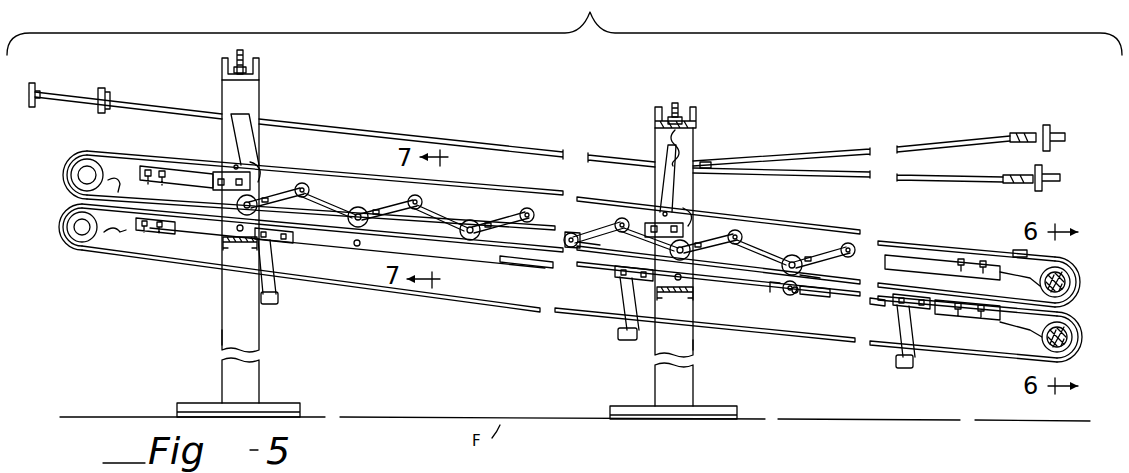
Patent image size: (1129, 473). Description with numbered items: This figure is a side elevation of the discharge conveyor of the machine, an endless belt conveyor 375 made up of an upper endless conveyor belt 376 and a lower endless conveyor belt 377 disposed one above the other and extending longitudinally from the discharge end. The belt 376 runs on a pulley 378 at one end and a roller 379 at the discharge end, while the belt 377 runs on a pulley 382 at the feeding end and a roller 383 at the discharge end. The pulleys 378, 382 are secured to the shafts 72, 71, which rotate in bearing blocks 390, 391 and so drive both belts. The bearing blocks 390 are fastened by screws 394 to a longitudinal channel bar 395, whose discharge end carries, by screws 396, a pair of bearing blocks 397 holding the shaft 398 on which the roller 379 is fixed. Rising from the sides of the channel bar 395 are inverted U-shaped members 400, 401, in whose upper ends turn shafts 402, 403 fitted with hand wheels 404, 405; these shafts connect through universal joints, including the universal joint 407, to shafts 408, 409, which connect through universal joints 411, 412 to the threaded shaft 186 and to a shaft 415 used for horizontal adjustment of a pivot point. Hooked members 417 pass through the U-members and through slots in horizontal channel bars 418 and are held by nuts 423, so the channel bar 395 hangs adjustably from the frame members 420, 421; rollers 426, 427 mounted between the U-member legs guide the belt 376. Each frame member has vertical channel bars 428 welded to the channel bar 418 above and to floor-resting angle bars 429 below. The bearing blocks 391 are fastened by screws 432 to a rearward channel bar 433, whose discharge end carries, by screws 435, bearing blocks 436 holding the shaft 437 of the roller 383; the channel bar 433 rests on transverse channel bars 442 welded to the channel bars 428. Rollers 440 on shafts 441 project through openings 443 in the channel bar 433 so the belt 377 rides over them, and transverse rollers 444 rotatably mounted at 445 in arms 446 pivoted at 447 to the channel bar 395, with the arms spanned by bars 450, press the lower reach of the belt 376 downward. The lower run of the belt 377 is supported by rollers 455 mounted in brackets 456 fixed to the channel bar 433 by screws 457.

The shaft 71 is at (1082, 337).
The shaft 72 is at (1072, 282).
The threaded shaft 186 is at (1048, 172).
The endless belt conveyor 375 is at (380, 304).
The endless conveyor belt 376 is at (506, 190).
The endless conveyor belt 377 is at (506, 312).
The pulley 378 is at (1070, 262).
The roller 379 is at (70, 167).
The pulley 382 is at (1080, 322).
The roller 383 is at (66, 222).
The bearing blocks 390 is at (1030, 280).
The bearing blocks 391 is at (1030, 330).
The screws 394 is at (957, 272).
The channel bar 395 is at (932, 264).
The screws 396 is at (160, 185).
The bearing blocks 397 is at (112, 183).
The shaft 398 is at (70, 184).
The inverted U-shaped member 400 is at (666, 183).
The inverted U-shaped member 401 is at (249, 138).
The shaft 402 is at (74, 100).
The shaft 403 is at (592, 153).
The hand wheel 404 is at (34, 84).
The hand wheel 405 is at (104, 88).
The universal joint 407 is at (708, 164).
The shaft 408 is at (896, 176).
The shaft 409 is at (897, 135).
The universal joint 411 is at (1016, 170).
The universal joint 412 is at (1015, 125).
The shaft 415 is at (1052, 130).
The hooked member 417 is at (241, 52).
The channel bar 418 is at (222, 68).
The inverted U-shaped frame member 420 is at (693, 351).
The inverted U-shaped frame member 421 is at (260, 338).
The nuts 423 is at (246, 68).
The roller 426 is at (688, 217).
The roller 427 is at (252, 162).
The channel bars 428 is at (261, 100).
The angle bars 429 is at (272, 403).
The screws 432 is at (966, 320).
The channel bar 433 is at (518, 268).
The screws 435 is at (150, 234).
The bearing blocks 436 is at (118, 232).
The shaft 437 is at (68, 238).
The rollers 440 is at (787, 296).
The shafts 441 is at (236, 229).
The transverse channel bars 442 is at (220, 244).
The opening 443 is at (808, 272).
The transverse rollers 444 is at (235, 204).
The pivot mounting 445 is at (355, 208).
The arms 446 is at (288, 189).
The pivot 447 is at (310, 178).
The bars 450 is at (259, 207).
The rollers 455 is at (282, 300).
The brackets 456 is at (273, 272).
The screws 457 is at (268, 240).